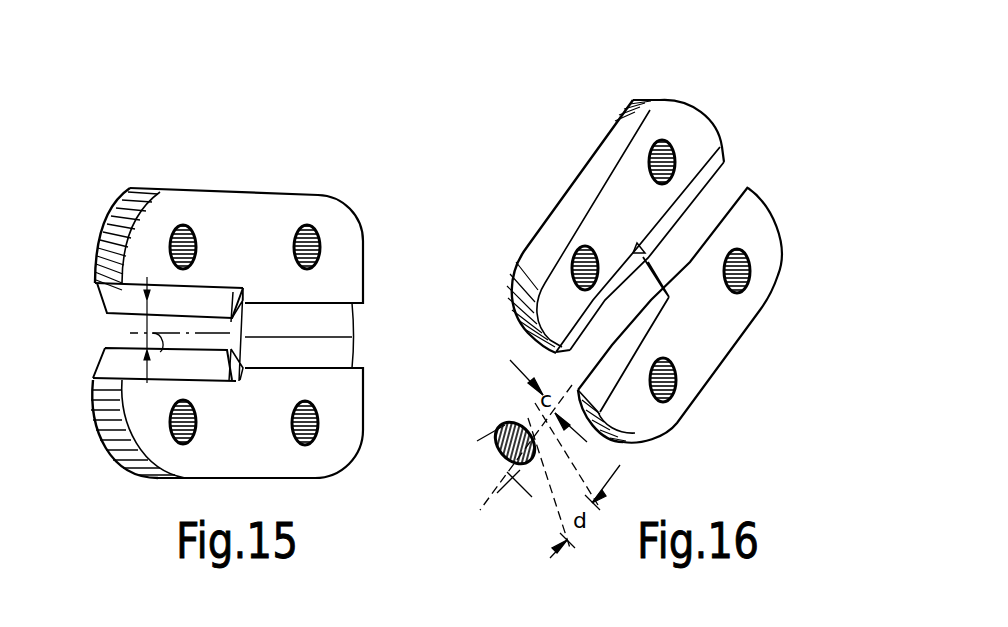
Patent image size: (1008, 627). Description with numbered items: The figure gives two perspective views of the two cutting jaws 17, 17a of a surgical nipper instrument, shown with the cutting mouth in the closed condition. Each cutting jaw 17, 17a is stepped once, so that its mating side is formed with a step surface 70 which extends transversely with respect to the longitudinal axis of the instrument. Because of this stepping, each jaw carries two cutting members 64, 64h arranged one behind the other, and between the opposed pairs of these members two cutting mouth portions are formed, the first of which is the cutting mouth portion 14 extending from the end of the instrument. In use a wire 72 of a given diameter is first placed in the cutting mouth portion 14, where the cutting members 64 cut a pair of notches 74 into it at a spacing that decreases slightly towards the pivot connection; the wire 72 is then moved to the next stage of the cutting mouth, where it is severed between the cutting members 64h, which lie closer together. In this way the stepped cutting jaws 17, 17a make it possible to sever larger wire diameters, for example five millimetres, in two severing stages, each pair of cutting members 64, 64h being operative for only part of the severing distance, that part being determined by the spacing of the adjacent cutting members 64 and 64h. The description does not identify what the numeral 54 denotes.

In FIG. 15, the cutting mouth portion 14 is at (117, 330).
In FIG. 15, the cutting jaw 17 is at (356, 454).
In FIG. 16, the cutting jaw 17 is at (713, 315).
In FIG. 15, the cutting jaw 17a is at (253, 206).
In FIG. 16, the cutting jaw 17a is at (697, 102).
In FIG. 15, the bore holes 54 is at (183, 225).
In FIG. 16, the bore holes 54 is at (678, 379).
In FIG. 15, the cutting member 64 is at (132, 303).
In FIG. 16, the cutting member 64 is at (631, 337).
In FIG. 15, the cutting member 64h is at (335, 357).
In FIG. 16, the cutting member 64h is at (735, 190).
In FIG. 15, the step surface 70 is at (245, 375).
In FIG. 16, the step surface 70 is at (668, 318).
In FIG. 16, the wire 72 is at (477, 441).
In FIG. 16, the notch 74 is at (507, 423).